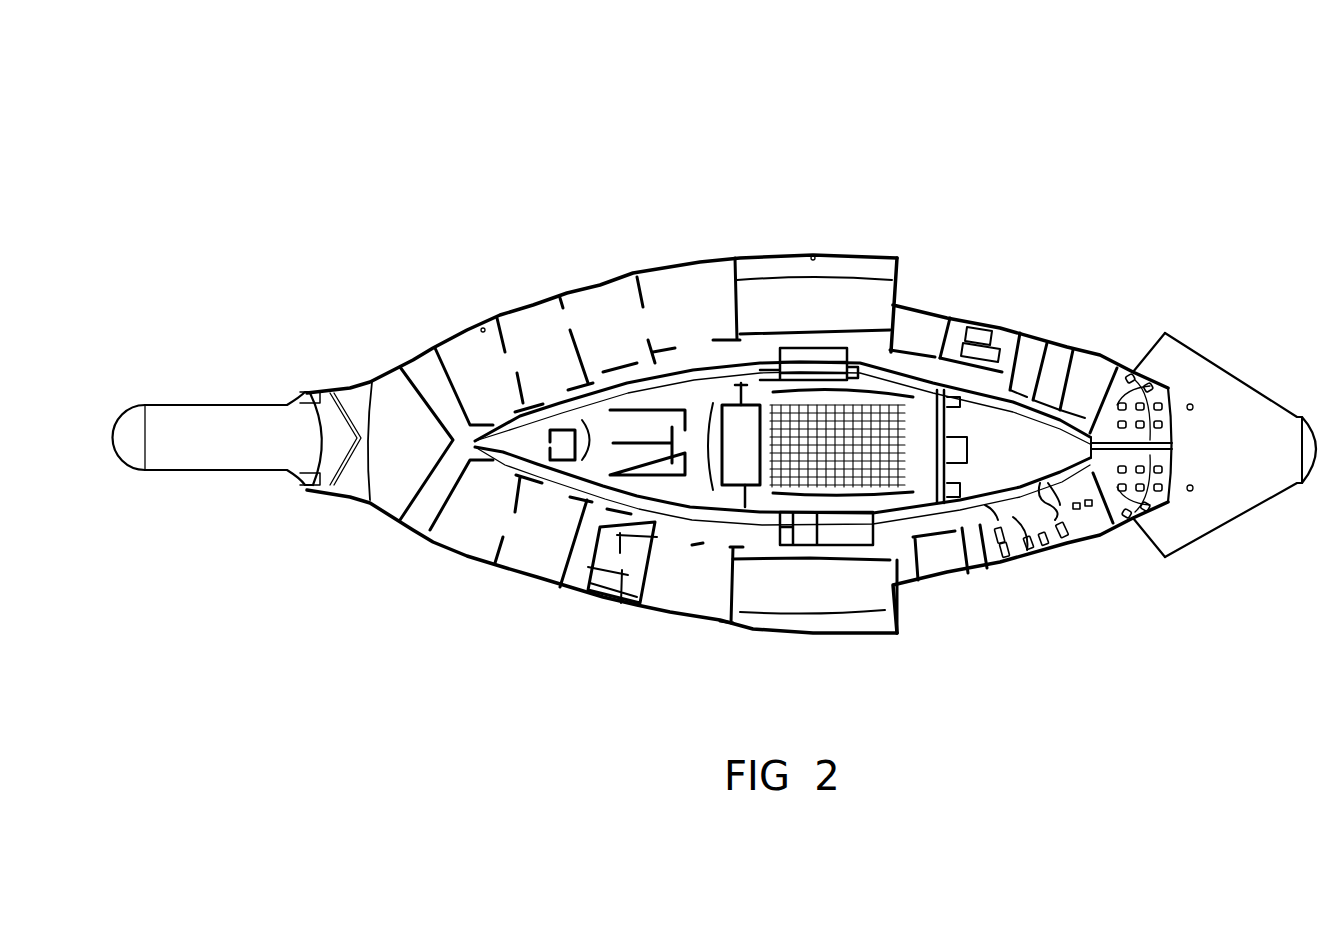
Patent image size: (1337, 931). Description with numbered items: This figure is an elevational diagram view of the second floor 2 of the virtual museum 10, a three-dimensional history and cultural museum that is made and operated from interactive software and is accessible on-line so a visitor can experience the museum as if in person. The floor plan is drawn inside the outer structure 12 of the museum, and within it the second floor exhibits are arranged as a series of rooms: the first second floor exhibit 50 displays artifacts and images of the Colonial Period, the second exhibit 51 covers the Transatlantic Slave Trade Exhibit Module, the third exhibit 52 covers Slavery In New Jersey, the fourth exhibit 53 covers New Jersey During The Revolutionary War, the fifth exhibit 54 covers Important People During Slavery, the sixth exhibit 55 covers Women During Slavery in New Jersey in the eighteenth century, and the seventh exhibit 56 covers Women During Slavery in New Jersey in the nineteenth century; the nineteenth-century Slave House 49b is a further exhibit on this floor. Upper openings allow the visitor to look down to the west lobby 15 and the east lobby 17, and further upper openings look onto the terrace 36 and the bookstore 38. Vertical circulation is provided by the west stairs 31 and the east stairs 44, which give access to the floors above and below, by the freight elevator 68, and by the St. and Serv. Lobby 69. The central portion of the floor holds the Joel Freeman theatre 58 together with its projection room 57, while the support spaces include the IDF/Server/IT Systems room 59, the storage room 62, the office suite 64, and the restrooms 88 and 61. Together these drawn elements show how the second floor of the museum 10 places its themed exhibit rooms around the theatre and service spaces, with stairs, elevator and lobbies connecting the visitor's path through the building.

The 3D virtual museum 10 is at (340, 112).
The second floor 2 is at (340, 500).
The outer structure 12 is at (385, 358).
The west lobby 15 is at (845, 300).
The east lobby 17 is at (845, 600).
The west stairs 31 is at (990, 320).
The upper opening to the terrace 36 is at (1160, 398).
The upper opening to the bookstore 38 is at (1053, 545).
The east stairs 44 is at (624, 595).
The 1800's Slave House 49b is at (548, 441).
The Second Floor Exhibit 1 50 is at (703, 625).
The Second Floor Exhibit 2 51 is at (528, 580).
The Second Floor Exhibit 3 52 is at (462, 557).
The Second Floor Exhibit 4 53 is at (457, 330).
The Second Floor Exhibit 5 54 is at (527, 306).
The Second Floor Exhibit 6 55 is at (600, 290).
The Second Floor Exhibit 7 56 is at (688, 270).
The projection room 57 is at (740, 470).
The Joel Freeman theatre 58 is at (926, 485).
The IDF/Server/IT Systems room 59 is at (913, 305).
The restroom 61 is at (1045, 340).
The storage room 62 is at (1095, 357).
The office suite 64 is at (960, 563).
The freight elevator 68 is at (660, 525).
The St. and Serv. Lobby 69 is at (587, 574).
The restroom 88 is at (675, 470).